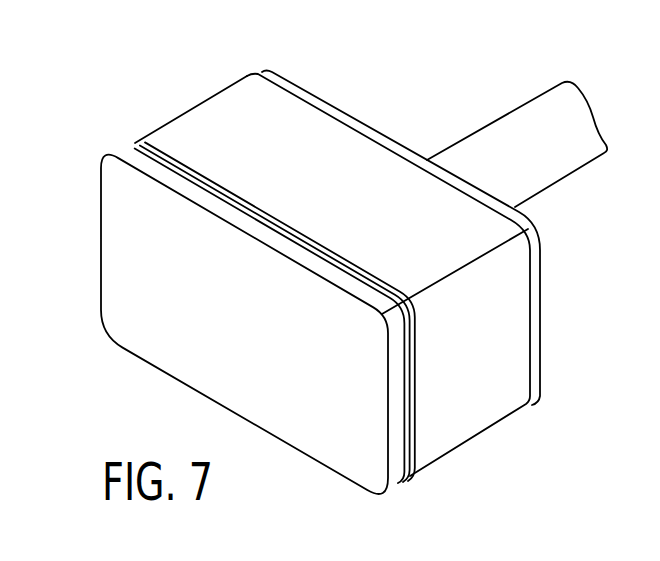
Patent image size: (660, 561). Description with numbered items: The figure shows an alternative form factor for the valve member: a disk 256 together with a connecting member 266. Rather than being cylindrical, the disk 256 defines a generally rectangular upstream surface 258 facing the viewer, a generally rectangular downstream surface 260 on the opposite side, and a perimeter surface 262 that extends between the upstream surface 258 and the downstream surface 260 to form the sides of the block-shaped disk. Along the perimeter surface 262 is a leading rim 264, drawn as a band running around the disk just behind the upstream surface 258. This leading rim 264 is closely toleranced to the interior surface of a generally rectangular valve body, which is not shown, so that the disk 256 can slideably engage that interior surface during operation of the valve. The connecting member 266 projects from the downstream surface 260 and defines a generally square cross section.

The disk 256 is at (152, 72).
The upstream surface 258 is at (265, 340).
The downstream surface 260 is at (403, 145).
The perimeter surface 262 is at (541, 399).
The leading rim 264 is at (397, 488).
The connecting member 266 is at (492, 118).